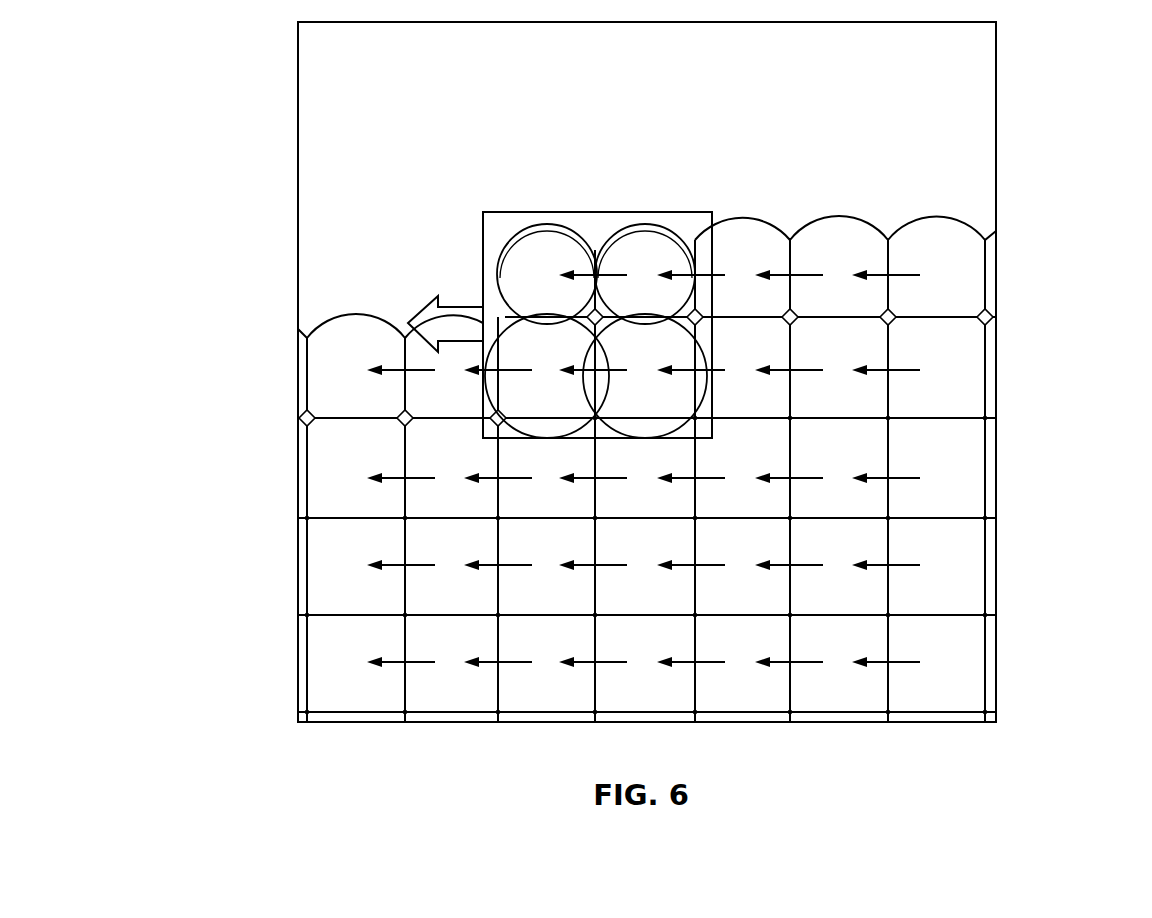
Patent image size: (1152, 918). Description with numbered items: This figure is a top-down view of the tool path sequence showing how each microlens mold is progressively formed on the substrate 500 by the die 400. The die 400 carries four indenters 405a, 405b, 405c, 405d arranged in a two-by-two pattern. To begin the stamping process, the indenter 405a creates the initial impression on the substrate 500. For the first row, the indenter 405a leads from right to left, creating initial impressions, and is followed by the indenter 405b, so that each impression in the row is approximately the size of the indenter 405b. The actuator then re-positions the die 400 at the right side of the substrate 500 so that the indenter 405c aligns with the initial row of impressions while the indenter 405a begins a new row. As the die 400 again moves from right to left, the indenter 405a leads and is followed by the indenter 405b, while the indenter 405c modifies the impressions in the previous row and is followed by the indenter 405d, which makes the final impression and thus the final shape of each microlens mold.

The substrate 500 is at (972, 180).
The die 400 is at (700, 200).
The indenter 405a is at (520, 258).
The indenter 405b is at (618, 238).
The indenter 405c is at (513, 338).
The indenter 405d is at (615, 389).